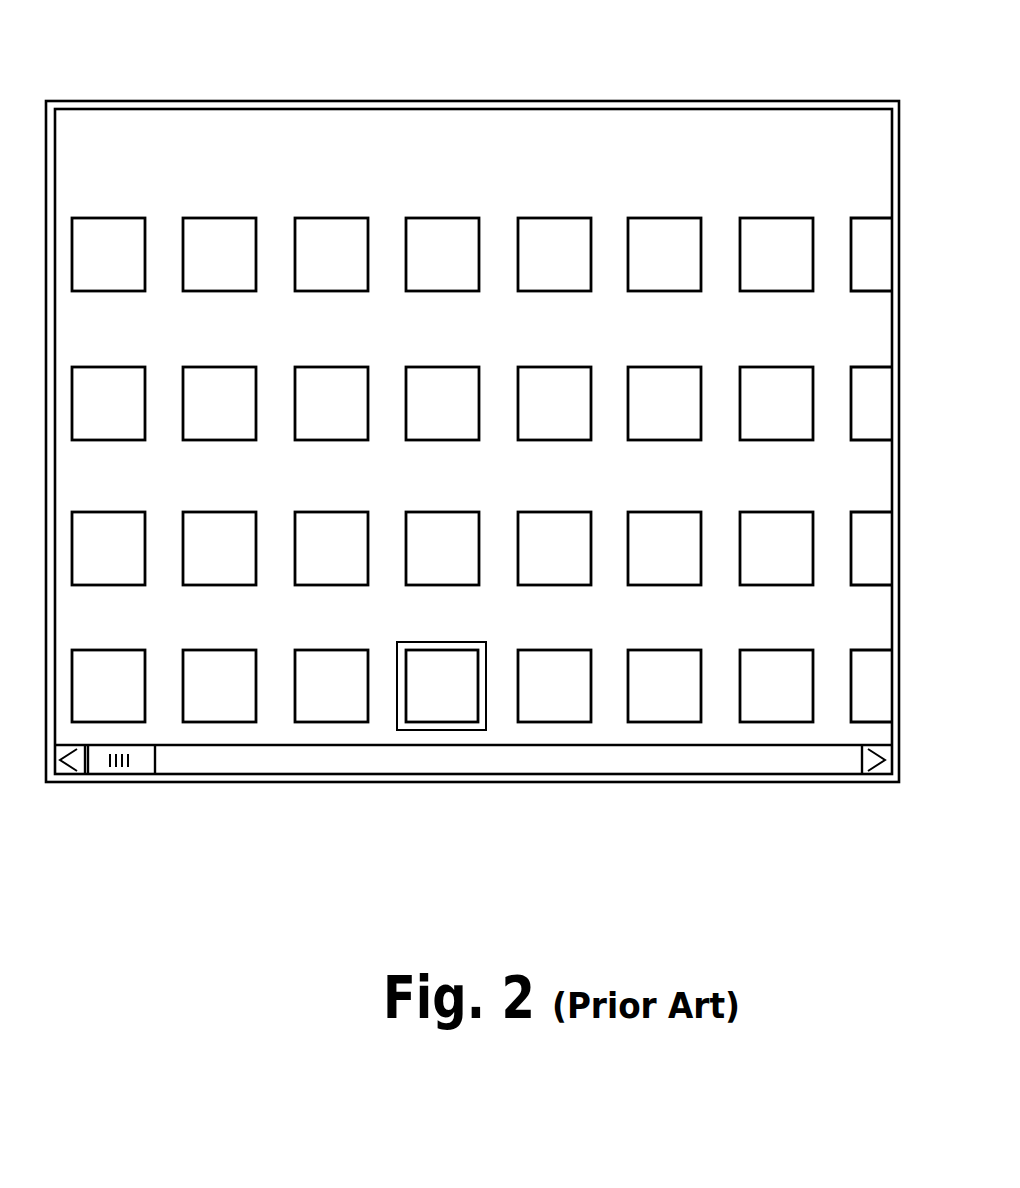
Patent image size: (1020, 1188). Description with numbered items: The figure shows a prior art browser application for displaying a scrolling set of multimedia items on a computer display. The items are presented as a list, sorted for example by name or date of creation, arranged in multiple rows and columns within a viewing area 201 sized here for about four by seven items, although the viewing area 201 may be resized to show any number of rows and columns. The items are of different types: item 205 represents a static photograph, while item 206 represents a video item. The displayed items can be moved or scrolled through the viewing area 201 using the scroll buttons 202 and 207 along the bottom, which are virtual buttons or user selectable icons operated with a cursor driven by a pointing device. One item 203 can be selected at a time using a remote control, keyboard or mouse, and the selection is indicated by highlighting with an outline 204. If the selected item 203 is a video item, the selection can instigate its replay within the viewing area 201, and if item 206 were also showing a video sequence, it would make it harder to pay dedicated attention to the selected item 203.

The viewing area 201 is at (411, 100).
The scroll button 202 is at (61, 762).
The selected item 203 is at (430, 708).
The outline 204 is at (487, 725).
The item 205 is at (543, 218).
The item 206 is at (660, 218).
The scroll button 207 is at (881, 766).